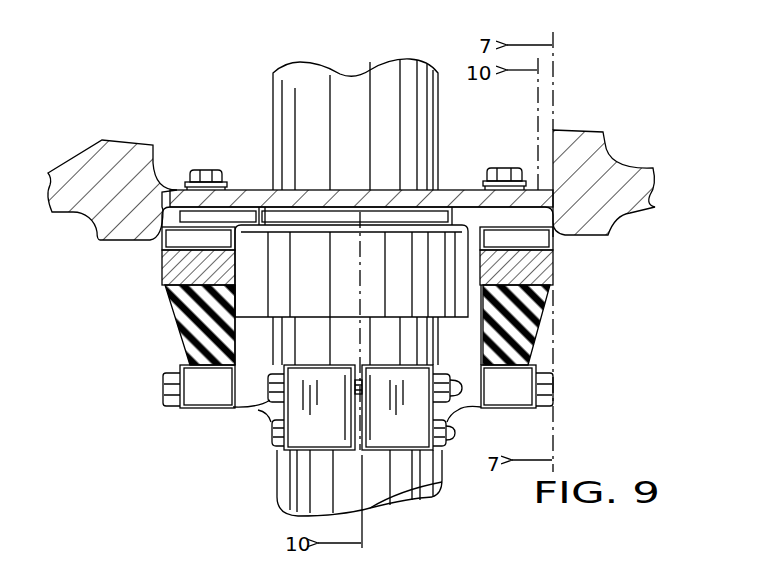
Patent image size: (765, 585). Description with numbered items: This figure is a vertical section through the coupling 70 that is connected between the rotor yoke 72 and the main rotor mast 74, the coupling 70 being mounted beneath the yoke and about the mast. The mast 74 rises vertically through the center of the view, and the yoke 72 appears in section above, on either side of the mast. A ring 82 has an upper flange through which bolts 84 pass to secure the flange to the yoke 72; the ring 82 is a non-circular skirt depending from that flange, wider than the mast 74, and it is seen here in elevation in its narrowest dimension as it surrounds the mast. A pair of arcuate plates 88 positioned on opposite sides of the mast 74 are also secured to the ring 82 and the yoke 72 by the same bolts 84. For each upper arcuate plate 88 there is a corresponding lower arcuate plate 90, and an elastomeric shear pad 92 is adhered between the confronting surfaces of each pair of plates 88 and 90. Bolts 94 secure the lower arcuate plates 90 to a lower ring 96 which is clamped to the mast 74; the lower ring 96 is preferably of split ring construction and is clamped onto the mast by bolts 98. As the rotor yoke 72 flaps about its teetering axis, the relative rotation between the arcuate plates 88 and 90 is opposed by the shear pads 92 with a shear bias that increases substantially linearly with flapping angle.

The coupling 70 is at (616, 333).
The rotor yoke 72 is at (613, 170).
The main rotor mast 74 is at (293, 130).
The ring 82 is at (322, 282).
The bolts 84 is at (206, 172).
The arcuate plates 88 is at (183, 266).
The lower arcuate plate 90 is at (197, 385).
The elastomeric shear pad 92 is at (183, 313).
The bolts 94 is at (165, 390).
The lower ring 96 is at (460, 408).
The bolts 98 is at (267, 432).